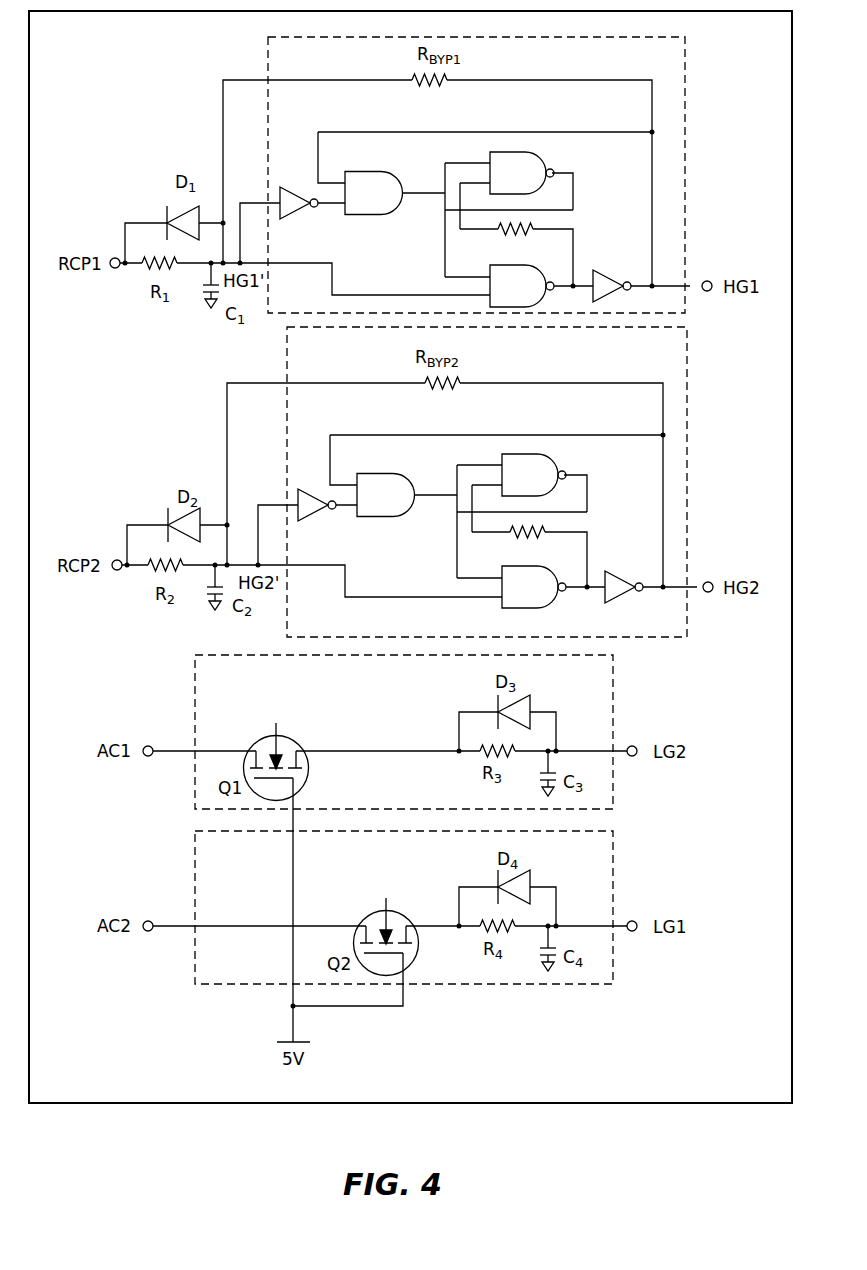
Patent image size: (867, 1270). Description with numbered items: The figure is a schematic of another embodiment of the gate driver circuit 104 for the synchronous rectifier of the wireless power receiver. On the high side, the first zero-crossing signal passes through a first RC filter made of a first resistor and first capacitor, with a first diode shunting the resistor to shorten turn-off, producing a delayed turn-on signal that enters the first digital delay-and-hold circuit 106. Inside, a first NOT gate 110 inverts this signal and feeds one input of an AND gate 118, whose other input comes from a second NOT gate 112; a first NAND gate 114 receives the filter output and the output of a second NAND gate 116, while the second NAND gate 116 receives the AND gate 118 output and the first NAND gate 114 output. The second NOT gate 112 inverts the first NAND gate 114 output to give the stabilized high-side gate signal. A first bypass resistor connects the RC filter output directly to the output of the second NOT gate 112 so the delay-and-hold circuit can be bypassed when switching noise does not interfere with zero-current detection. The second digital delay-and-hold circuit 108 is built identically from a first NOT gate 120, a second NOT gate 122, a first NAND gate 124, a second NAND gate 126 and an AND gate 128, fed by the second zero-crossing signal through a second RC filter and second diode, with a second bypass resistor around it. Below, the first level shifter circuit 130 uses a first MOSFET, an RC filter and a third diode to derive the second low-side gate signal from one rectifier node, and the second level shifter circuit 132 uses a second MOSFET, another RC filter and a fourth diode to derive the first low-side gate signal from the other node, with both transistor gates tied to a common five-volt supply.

The gate driver circuit 104 is at (82, 38).
The first digital delay-and-hold circuit 106 is at (313, 63).
The second digital delay-and-hold circuit 108 is at (330, 358).
The first NOT gate 110 is at (294, 216).
The second NOT gate 112 is at (613, 261).
The first NAND gate 114 is at (528, 296).
The second NAND gate 116 is at (528, 183).
The AND gate 118 is at (381, 203).
The first NOT gate 120 is at (312, 518).
The second NOT gate 122 is at (622, 574).
The first NAND gate 124 is at (540, 597).
The second NAND gate 126 is at (540, 485).
The AND gate 128 is at (397, 505).
The first level shifter circuit 130 is at (237, 686).
The second level shifter circuit 132 is at (237, 863).